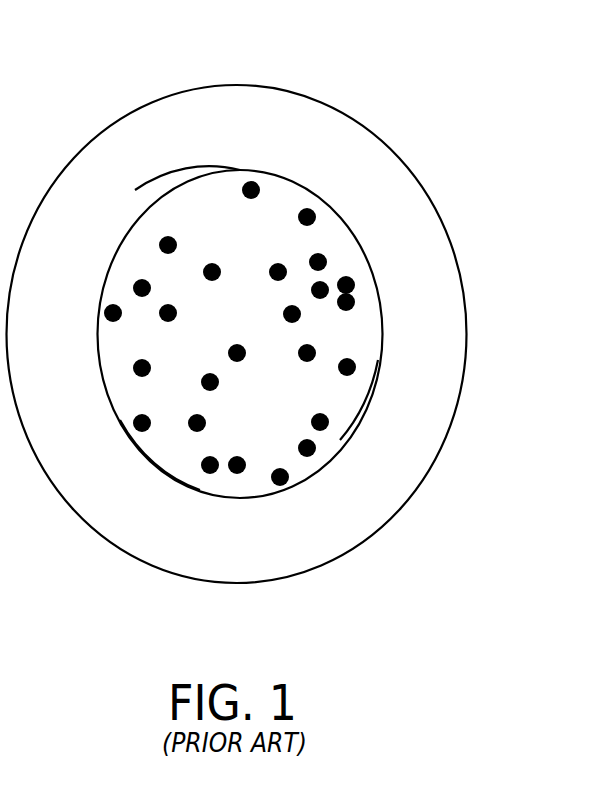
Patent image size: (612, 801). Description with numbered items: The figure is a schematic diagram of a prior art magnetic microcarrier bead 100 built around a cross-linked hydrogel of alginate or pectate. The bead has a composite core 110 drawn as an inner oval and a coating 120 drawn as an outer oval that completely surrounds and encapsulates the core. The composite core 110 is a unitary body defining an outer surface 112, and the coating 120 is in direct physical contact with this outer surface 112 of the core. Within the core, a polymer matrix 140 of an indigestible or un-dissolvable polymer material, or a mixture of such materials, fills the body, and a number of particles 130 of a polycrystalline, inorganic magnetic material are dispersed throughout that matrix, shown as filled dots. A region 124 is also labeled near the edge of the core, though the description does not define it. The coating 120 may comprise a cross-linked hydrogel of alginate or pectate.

The microcarrier bead 100 is at (450, 99).
The composite core 110 is at (167, 362).
The outer surface 112 is at (158, 476).
The coating 120 is at (213, 554).
The edge portion of inner region 124 is at (353, 421).
The particles 130 is at (318, 449).
The polymer matrix 140 is at (177, 200).